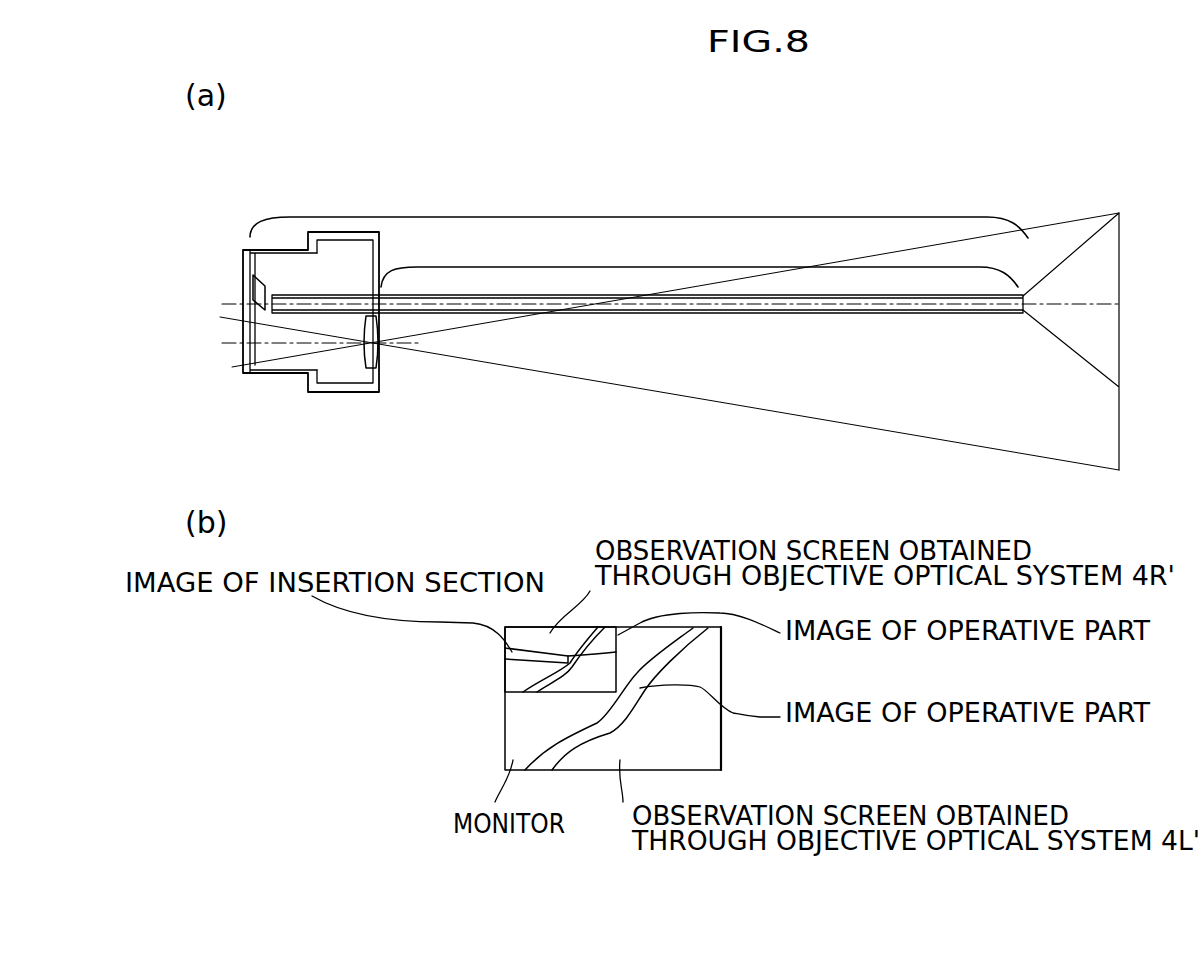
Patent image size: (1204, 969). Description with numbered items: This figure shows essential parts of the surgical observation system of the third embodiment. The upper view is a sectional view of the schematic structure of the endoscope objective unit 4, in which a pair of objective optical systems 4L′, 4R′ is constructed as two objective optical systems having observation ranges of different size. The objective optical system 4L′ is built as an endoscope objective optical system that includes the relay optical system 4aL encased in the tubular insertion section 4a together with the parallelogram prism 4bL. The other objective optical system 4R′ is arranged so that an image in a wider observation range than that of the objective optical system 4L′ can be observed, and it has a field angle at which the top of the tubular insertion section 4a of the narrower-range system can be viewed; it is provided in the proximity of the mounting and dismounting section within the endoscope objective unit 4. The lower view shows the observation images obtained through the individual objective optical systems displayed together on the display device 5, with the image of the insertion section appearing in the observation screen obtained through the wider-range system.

The endoscope objective unit 4 is at (703, 169).
The objective optical system 4L′ is at (660, 218).
The tubular insertion section 4a is at (711, 267).
The relay optical system 4aL is at (633, 303).
The parallelogram prism 4bL is at (262, 291).
The objective optical system 4R′ is at (372, 356).
The display device 5 is at (517, 722).